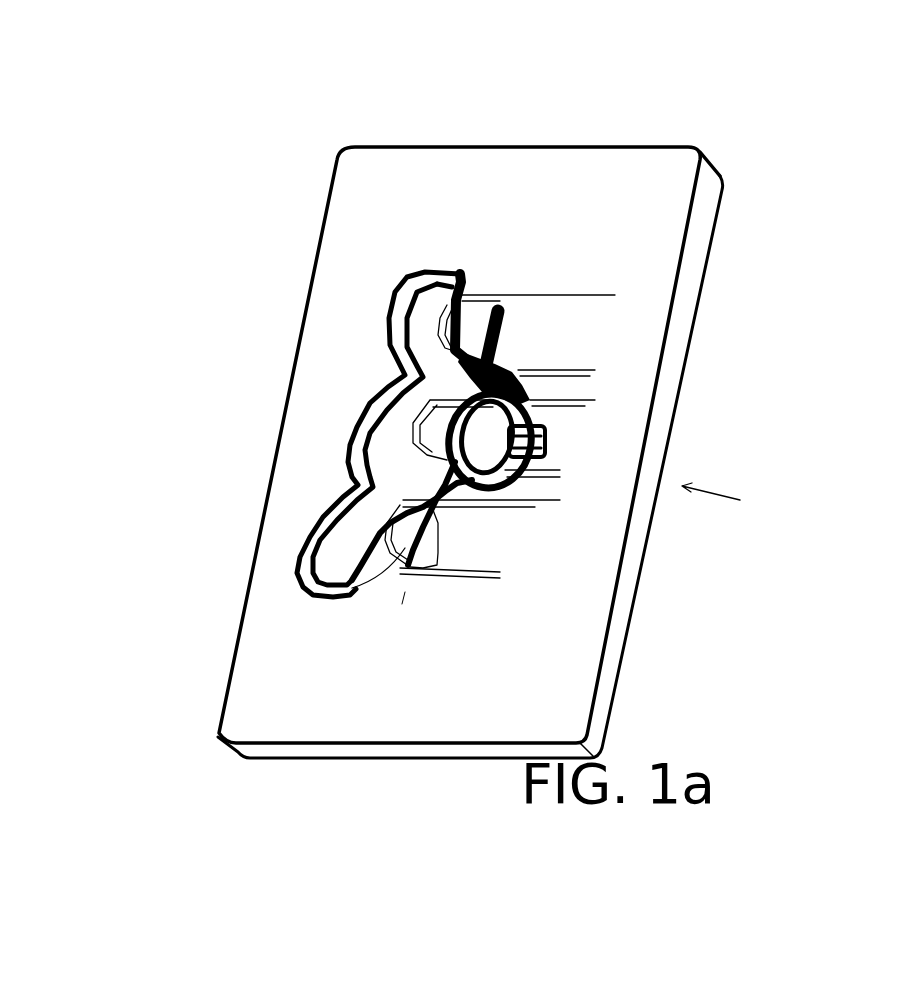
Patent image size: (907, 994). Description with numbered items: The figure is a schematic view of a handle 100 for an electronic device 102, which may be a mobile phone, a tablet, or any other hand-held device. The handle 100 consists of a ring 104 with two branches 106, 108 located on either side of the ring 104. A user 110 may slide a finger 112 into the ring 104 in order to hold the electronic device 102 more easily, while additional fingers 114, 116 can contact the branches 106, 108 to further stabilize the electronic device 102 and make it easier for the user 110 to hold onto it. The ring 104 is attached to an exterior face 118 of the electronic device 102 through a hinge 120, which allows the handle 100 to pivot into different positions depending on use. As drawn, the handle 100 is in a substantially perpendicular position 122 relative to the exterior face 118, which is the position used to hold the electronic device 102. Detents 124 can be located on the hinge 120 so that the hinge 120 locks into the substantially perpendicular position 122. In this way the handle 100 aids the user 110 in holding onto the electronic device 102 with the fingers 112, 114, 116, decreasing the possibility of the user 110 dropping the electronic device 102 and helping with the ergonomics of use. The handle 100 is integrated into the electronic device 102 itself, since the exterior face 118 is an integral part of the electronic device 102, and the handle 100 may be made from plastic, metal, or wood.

The handle 100 is at (431, 443).
The electronic device 102 is at (537, 395).
The ring 104 is at (483, 392).
The branch 106 is at (305, 592).
The branch 108 is at (492, 302).
The user 110 is at (737, 515).
The finger 112 is at (437, 423).
The additional finger 114 is at (470, 573).
The additional finger 116 is at (553, 323).
The exterior face 118 is at (459, 388).
The hinge 120 is at (515, 436).
The substantially perpendicular position 122 is at (405, 592).
The detents 124 is at (513, 470).